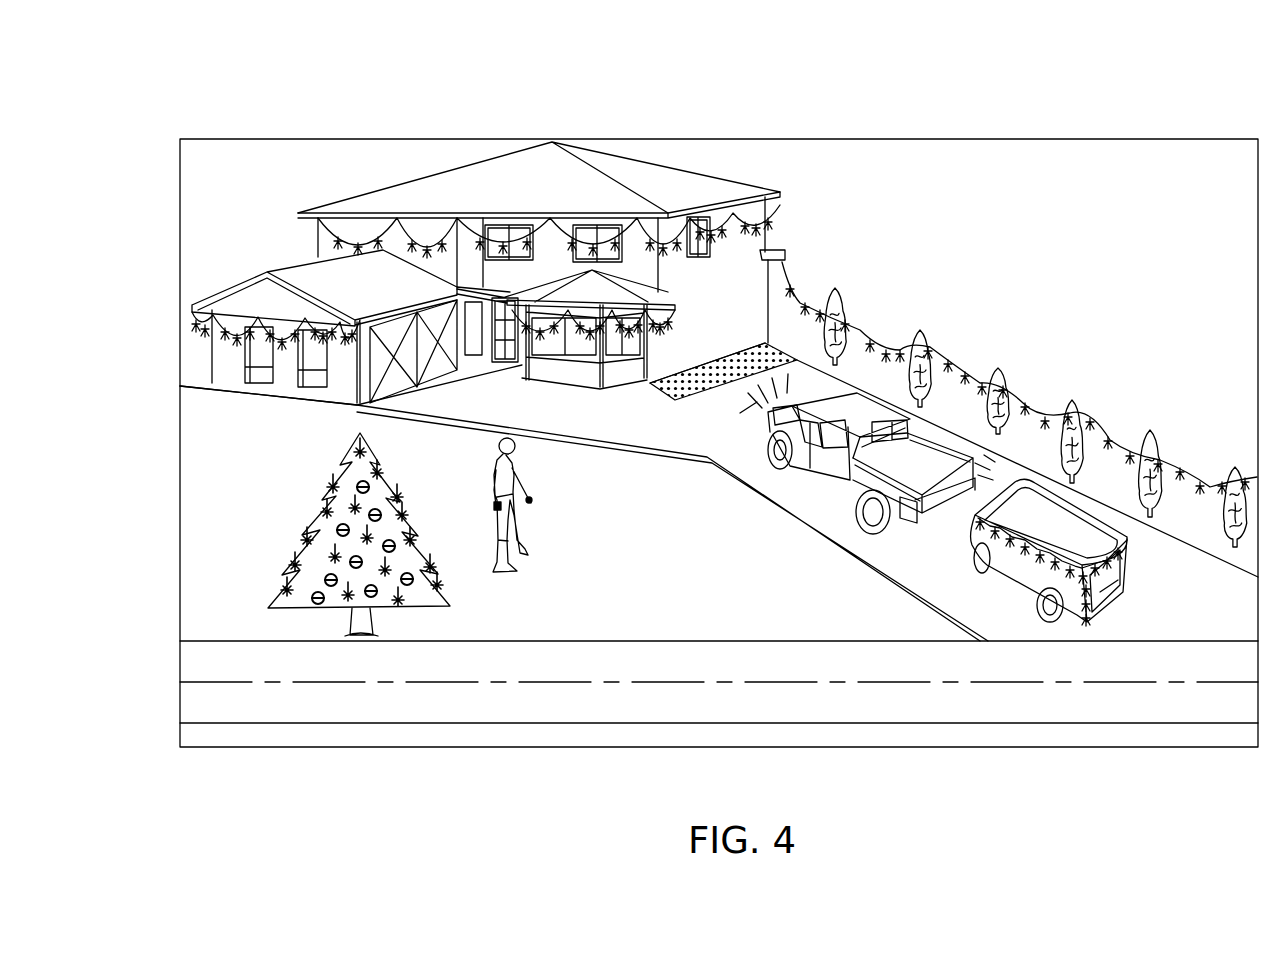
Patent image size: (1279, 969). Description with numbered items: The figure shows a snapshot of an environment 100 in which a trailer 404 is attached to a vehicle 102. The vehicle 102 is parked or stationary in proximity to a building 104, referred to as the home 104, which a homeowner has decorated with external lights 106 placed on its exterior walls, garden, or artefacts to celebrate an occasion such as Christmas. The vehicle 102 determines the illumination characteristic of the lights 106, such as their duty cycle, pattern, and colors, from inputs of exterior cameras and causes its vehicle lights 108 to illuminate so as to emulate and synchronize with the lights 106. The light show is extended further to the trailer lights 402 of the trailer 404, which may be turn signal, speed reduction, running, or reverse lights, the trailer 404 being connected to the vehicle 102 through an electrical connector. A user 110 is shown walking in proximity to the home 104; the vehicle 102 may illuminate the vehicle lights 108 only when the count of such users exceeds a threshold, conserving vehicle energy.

The environment 100 is at (152, 90).
The vehicle 102 is at (837, 470).
The building 104 is at (678, 182).
The external lights 106 is at (780, 198).
The vehicle lights 108 is at (903, 517).
The user 110 is at (520, 520).
The trailer lights 402 is at (1130, 571).
The trailer 404 is at (1013, 578).